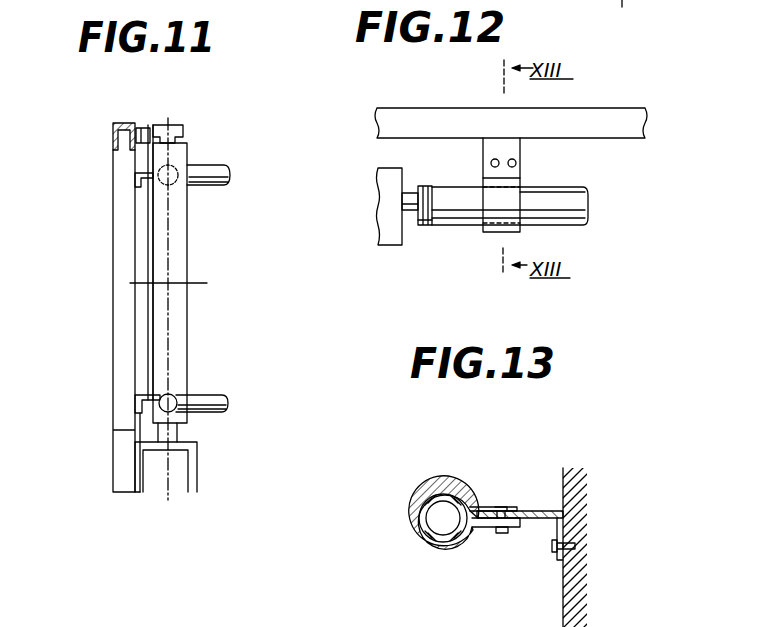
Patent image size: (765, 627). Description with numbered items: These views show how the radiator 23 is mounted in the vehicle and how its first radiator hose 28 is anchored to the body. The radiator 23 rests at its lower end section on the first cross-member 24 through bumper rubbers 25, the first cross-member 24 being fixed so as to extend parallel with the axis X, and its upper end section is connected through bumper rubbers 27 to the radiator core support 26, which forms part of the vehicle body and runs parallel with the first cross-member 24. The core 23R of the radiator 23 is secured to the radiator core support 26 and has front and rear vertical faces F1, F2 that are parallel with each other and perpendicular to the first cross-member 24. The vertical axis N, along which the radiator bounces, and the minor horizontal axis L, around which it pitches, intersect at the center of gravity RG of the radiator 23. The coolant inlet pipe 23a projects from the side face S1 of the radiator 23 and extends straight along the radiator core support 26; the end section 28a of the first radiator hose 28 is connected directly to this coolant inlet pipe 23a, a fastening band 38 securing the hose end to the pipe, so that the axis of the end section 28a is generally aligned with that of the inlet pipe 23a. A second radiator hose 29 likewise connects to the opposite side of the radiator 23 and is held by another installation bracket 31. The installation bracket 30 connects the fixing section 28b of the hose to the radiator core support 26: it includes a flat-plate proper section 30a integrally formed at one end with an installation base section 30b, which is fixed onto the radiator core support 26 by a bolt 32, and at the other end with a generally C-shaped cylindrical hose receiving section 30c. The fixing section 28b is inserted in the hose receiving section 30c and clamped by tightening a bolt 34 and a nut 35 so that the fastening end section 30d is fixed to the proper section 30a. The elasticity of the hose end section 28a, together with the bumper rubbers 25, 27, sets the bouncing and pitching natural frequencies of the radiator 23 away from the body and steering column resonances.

In FIG. 11, the radiator 23 is at (188, 266).
In FIG. 12, the radiator 23 is at (380, 197).
In FIG. 11, the core 23R is at (177, 237).
In FIG. 12, the coolant inlet pipe 23a is at (412, 190).
In FIG. 11, the first cross-member 24 is at (196, 470).
In FIG. 11, the bumper rubbers 25 is at (174, 435).
In FIG. 11, the radiator core support 26 is at (122, 148).
In FIG. 12, the radiator core support 26 is at (622, 117).
In FIG. 13, the radiator core support 26 is at (572, 595).
In FIG. 11, the bumper rubbers 27 is at (143, 130).
In FIG. 11, the first radiator hose 28 is at (218, 173).
In FIG. 12, the first radiator hose 28 is at (588, 197).
In FIG. 13, the first radiator hose 28 is at (433, 552).
In FIG. 12, the end section 28a is at (460, 225).
In FIG. 12, the fixing section 28b is at (498, 220).
In FIG. 11, the second radiator hose 29 is at (212, 398).
In FIG. 11, the installation bracket 30 is at (148, 163).
In FIG. 13, the installation bracket 30 is at (498, 455).
In FIG. 12, the proper section 30a is at (517, 150).
In FIG. 13, the proper section 30a is at (540, 510).
In FIG. 13, the installation base section 30b is at (565, 528).
In FIG. 12, the hose receiving section 30c is at (520, 218).
In FIG. 13, the hose receiving section 30c is at (412, 525).
In FIG. 13, the fastening end section 30d is at (512, 527).
In FIG. 11, the installation bracket 31 is at (150, 392).
In FIG. 13, the bolt 32 is at (553, 553).
In FIG. 13, the bolt 34 is at (497, 507).
In FIG. 13, the nut 35 is at (496, 533).
In FIG. 12, the fastening band 38 is at (432, 225).
In FIG. 11, the vertical axis N is at (168, 295).
In FIG. 11, the minor horizontal axis L is at (176, 286).
In FIG. 11, the front vertical face F1 is at (150, 232).
In FIG. 11, the rear vertical face F2 is at (187, 337).
In FIG. 11, the center of gravity RG is at (167, 285).
In FIG. 12, the side face S1 is at (403, 175).
In FIG. 12, the axis X is at (623, 18).